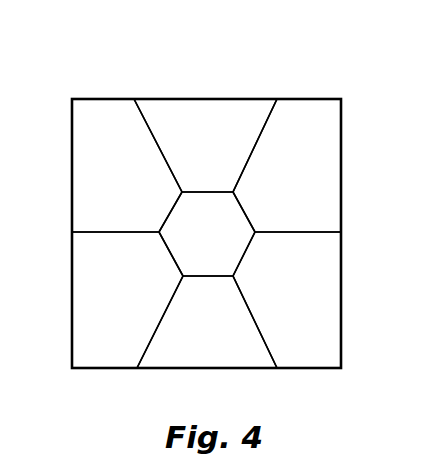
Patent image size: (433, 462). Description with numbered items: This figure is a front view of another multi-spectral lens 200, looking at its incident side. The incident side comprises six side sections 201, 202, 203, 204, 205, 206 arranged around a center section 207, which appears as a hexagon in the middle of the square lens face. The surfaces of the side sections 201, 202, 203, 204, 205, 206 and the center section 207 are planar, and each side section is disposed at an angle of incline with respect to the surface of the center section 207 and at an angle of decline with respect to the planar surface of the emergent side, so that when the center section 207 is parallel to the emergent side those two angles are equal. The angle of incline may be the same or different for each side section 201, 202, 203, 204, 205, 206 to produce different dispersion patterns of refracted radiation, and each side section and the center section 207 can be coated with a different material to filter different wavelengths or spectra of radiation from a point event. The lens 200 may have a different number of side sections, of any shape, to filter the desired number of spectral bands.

The multi-spectral lens 200 is at (88, 56).
The side section 201 is at (110, 182).
The side section 202 is at (208, 147).
The side section 203 is at (299, 180).
The side section 204 is at (308, 308).
The side section 205 is at (234, 343).
The side section 206 is at (102, 288).
The center section 207 is at (207, 241).